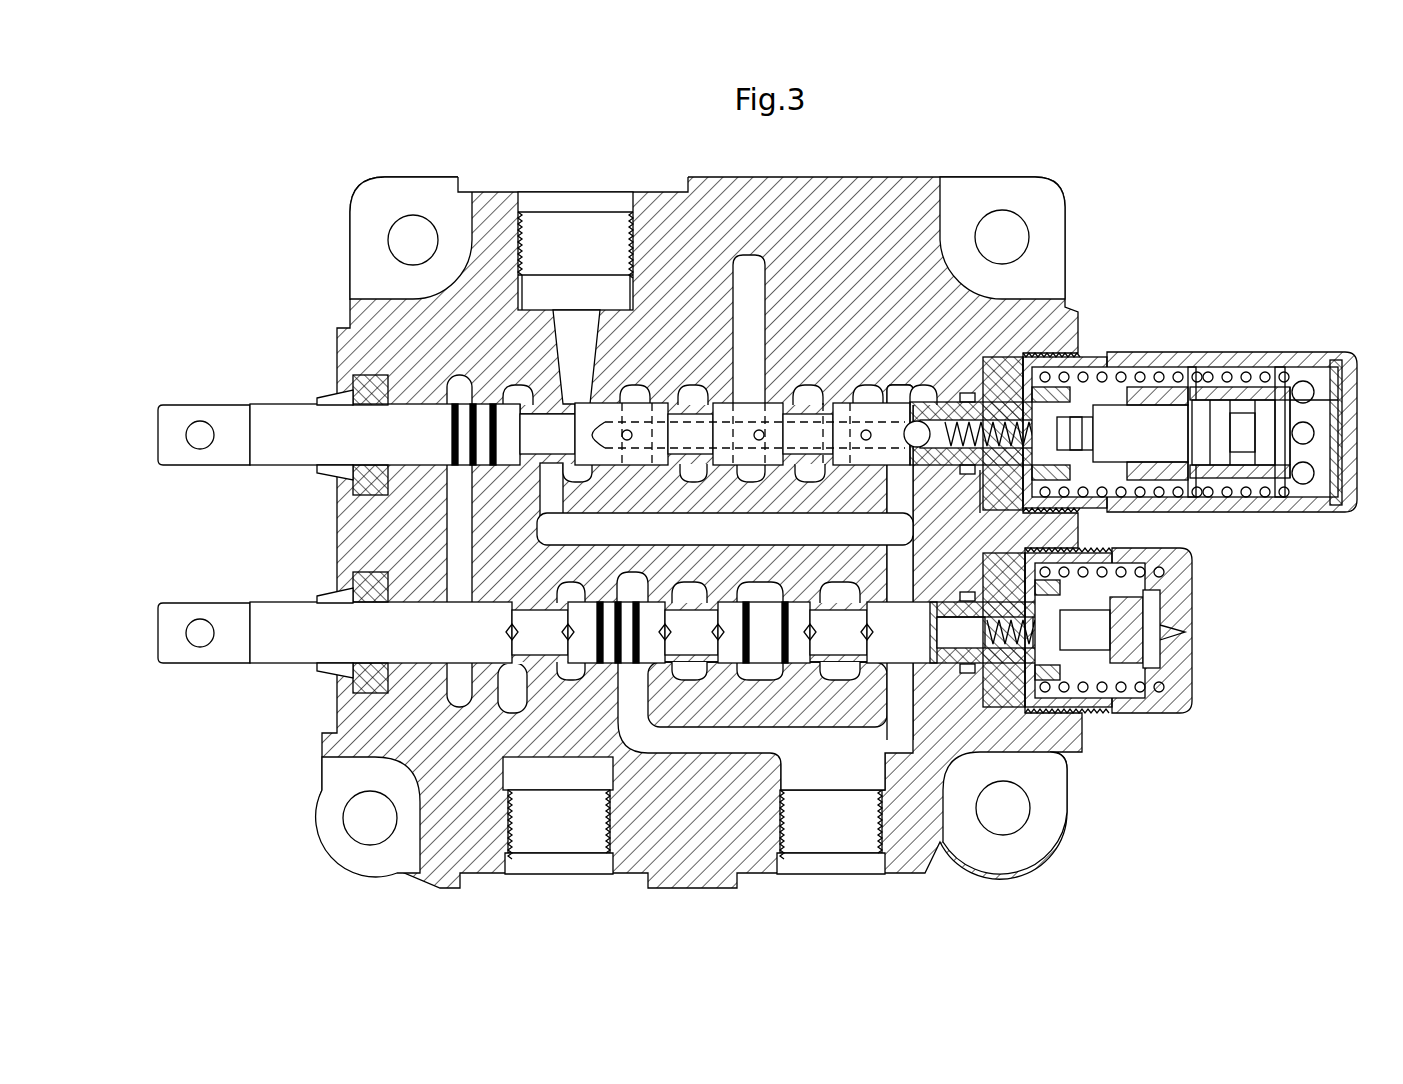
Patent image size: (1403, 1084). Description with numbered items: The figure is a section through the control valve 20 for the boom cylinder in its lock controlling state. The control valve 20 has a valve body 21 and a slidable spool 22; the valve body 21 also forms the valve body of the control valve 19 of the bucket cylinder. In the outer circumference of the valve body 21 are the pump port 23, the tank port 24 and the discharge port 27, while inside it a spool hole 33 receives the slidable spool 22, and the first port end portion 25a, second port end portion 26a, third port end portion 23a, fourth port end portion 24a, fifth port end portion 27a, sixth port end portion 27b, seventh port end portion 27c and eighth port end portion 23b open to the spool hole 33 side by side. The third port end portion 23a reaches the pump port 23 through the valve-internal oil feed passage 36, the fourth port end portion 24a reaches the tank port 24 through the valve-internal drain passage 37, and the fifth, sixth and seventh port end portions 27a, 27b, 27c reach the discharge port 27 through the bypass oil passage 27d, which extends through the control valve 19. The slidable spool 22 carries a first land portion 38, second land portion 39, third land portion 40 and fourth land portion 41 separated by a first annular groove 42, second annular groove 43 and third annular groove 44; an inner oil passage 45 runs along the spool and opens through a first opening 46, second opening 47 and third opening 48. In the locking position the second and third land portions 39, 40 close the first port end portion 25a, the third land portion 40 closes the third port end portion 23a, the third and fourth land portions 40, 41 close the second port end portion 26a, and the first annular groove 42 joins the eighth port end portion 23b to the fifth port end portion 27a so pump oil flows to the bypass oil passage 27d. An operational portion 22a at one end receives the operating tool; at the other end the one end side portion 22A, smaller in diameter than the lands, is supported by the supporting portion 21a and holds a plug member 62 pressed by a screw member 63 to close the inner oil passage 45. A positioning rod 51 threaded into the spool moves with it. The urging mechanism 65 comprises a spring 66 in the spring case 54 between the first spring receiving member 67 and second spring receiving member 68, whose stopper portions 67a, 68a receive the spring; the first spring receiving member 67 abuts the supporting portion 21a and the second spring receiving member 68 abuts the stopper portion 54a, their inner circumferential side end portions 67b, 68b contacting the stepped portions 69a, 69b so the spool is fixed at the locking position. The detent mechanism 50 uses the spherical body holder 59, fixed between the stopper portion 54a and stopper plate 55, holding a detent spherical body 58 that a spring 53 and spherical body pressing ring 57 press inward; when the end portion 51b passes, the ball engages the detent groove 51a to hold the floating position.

The control valve 19 is at (304, 716).
The control valve 20 is at (316, 308).
The valve body 21 is at (825, 200).
The supporting portion 21a is at (978, 490).
The slidable spool 22 is at (418, 420).
The operational portion 22a is at (215, 410).
The one end side portion 22A is at (990, 395).
The pump port 23 is at (572, 200).
The third port end portion 23a is at (762, 466).
The eighth port end portion 23b is at (605, 465).
The tank port 24 is at (828, 835).
The fourth port end portion 24a is at (930, 410).
The first port end portion 25a is at (693, 387).
The second port end portion 26a is at (808, 387).
The discharge port 27 is at (558, 835).
The fifth port end portion 27a is at (517, 392).
The sixth port end portion 27b is at (636, 385).
The seventh port end portion 27c is at (867, 387).
The bypass oil passage 27d is at (468, 565).
The spool hole 33 is at (547, 408).
The valve-internal oil feed passage 36 is at (748, 270).
The valve-internal drain passage 37 is at (895, 576).
The first land portion 38 is at (487, 418).
The second land portion 39 is at (632, 466).
The third land portion 40 is at (743, 425).
The fourth land portion 41 is at (893, 420).
The first annular groove 42 is at (548, 465).
The second annular groove 43 is at (694, 470).
The third annular groove 44 is at (810, 466).
The inner oil passage 45 is at (921, 395).
The first opening 46 is at (626, 442).
The second opening 47 is at (762, 442).
The third opening 48 is at (866, 442).
The detent mechanism 50 is at (1262, 278).
The positioning rod 51 is at (1172, 415).
The detent groove 51a is at (1232, 485).
The end portion 51b is at (1325, 385).
The spring 53 is at (1228, 375).
The spring case 54 is at (1150, 365).
The stopper portion 54a is at (1192, 375).
The stopper plate 55 is at (1342, 470).
The spherical body pressing ring 57 is at (1287, 375).
The detent spherical body 58 is at (1303, 381).
The spherical body holder 59 is at (1265, 375).
The plug member 62 is at (912, 455).
The screw member 63 is at (950, 400).
The urging mechanism 65 is at (1200, 535).
The spring 66 is at (1115, 375).
The first spring receiving member 67 is at (1045, 478).
The stopper portion 67a is at (1035, 375).
The inner circumferential side end portion 67b is at (1062, 400).
The second spring receiving member 68 is at (1143, 470).
The stopper portion 68a is at (1182, 512).
The inner circumferential side end portion 68b is at (1208, 375).
The stepped portion 69a is at (1090, 460).
The stepped portion 69b is at (1185, 428).